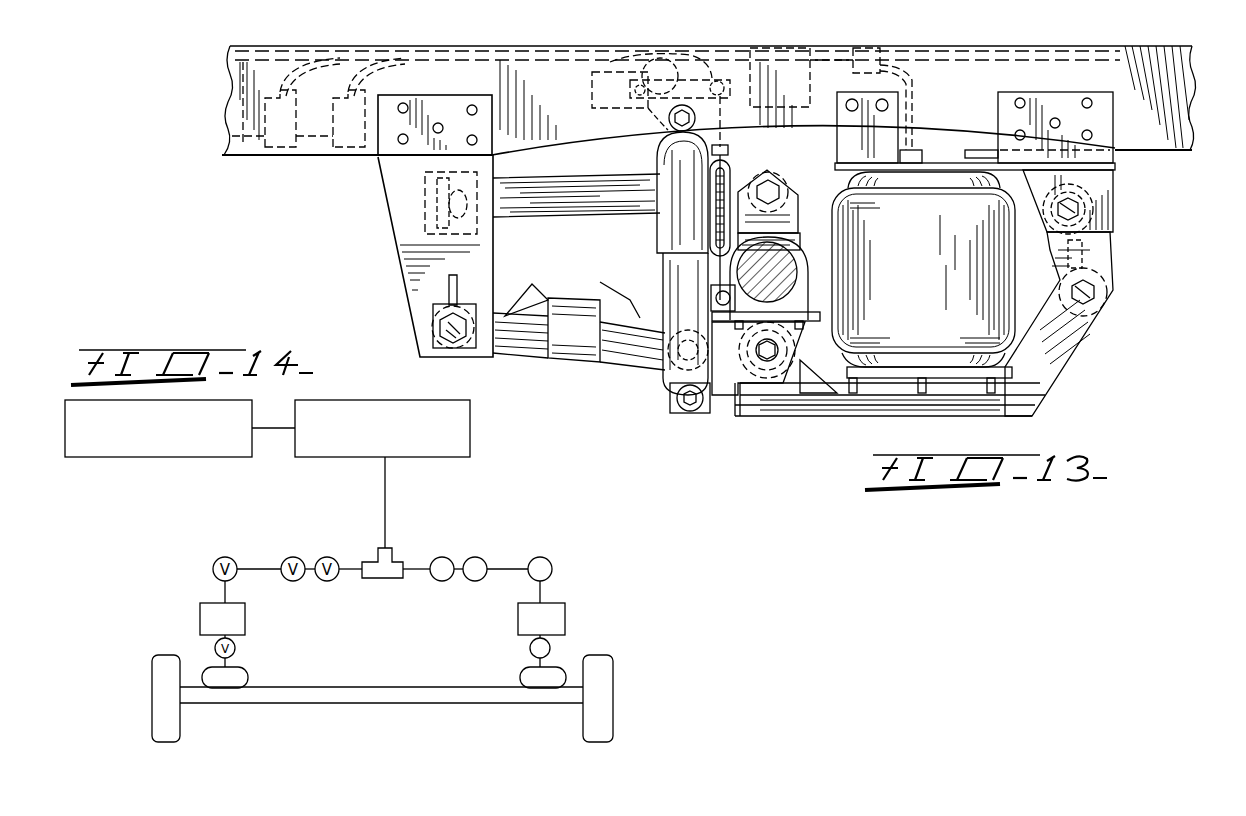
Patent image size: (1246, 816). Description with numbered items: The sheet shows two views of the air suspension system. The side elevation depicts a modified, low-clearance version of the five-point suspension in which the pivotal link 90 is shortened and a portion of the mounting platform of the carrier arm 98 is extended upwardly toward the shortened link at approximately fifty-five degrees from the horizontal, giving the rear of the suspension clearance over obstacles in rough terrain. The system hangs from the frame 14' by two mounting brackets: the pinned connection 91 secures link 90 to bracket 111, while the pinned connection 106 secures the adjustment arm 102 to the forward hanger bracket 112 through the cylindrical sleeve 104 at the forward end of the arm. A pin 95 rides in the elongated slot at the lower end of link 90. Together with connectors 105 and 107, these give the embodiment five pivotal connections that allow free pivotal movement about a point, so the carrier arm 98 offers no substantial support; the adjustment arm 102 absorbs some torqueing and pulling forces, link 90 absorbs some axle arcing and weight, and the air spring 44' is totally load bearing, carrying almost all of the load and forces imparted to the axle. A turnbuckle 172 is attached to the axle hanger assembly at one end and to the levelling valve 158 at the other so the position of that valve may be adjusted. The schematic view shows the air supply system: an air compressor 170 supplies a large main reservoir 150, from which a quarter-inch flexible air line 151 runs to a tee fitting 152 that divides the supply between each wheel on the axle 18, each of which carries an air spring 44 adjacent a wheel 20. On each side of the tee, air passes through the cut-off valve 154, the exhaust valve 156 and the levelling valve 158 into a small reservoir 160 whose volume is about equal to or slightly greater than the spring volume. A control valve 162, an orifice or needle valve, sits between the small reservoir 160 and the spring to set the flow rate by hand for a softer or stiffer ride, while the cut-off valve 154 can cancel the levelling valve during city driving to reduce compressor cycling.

In FIG. 13, the frame 14' is at (714, 119).
In FIG. 14, the rear axle 18 is at (500, 700).
In FIG. 14, the wheel 20 is at (613, 683).
In FIG. 14, the air spring 44 is at (422, 657).
In FIG. 13, the air spring 44' is at (940, 269).
In FIG. 13, the pivotal link 90 is at (1100, 262).
In FIG. 13, the pinned connection 91 is at (1085, 208).
In FIG. 13, the pin 95 is at (1095, 296).
In FIG. 13, the carrier arm 98 is at (978, 420).
In FIG. 13, the adjustment arm 102 is at (560, 366).
In FIG. 13, the cylindrical sleeve 104 is at (432, 330).
In FIG. 13, the pivotal connector 105 is at (665, 376).
In FIG. 13, the pinned connection 106 is at (440, 350).
In FIG. 13, the pivotal connector 107 is at (778, 362).
In FIG. 13, the bracket 111 is at (1098, 184).
In FIG. 13, the forward hanger bracket 112 is at (398, 280).
In FIG. 14, the main reservoir 150 is at (470, 432).
In FIG. 14, the air line 151 is at (385, 522).
In FIG. 14, the tee fitting 152 is at (398, 554).
In FIG. 13, the cut-off valve 154 is at (348, 112).
In FIG. 14, the cut-off valve 154 is at (442, 557).
In FIG. 13, the exhaust valve 156 is at (265, 106).
In FIG. 14, the exhaust valve 156 is at (478, 557).
In FIG. 13, the levelling valve 158 is at (592, 85).
In FIG. 14, the levelling valve 158 is at (553, 560).
In FIG. 13, the small reservoir 160 is at (776, 72).
In FIG. 14, the small reservoir 160 is at (200, 612).
In FIG. 13, the control valve 162 is at (905, 84).
In FIG. 14, the control valve 162 is at (552, 647).
In FIG. 14, the air compressor 170 is at (185, 458).
In FIG. 13, the turnbuckle 172 is at (730, 150).